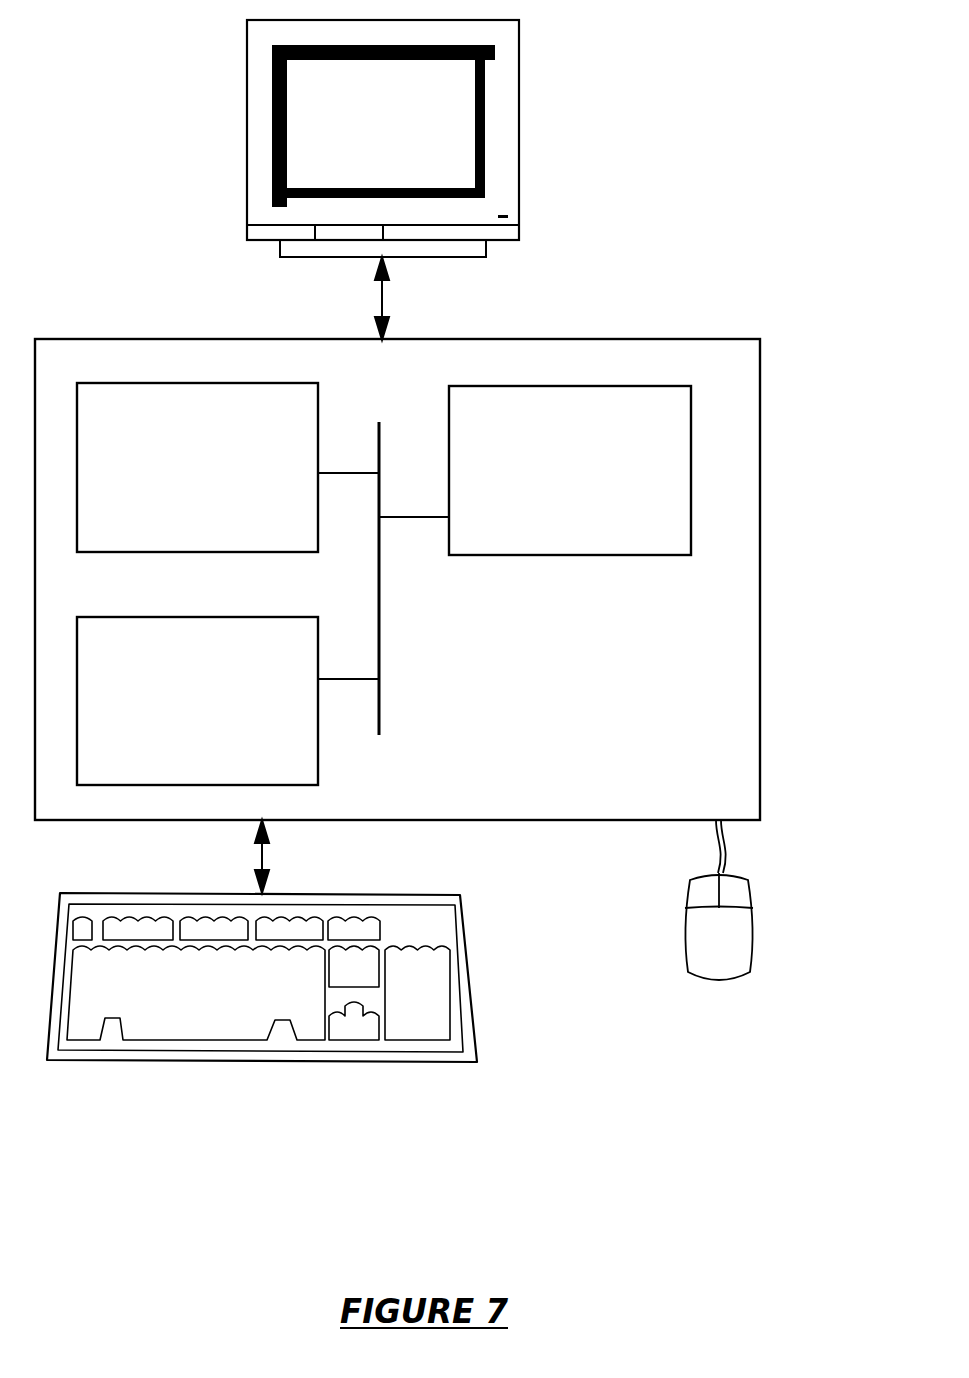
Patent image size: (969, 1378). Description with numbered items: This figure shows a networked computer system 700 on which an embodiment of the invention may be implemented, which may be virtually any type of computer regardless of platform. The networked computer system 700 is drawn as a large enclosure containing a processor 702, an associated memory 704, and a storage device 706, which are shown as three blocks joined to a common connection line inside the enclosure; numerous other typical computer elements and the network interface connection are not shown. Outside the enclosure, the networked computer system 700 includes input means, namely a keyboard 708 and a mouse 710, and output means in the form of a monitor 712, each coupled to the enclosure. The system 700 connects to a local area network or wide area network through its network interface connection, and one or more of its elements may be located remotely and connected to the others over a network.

The networked computer system 700 is at (781, 187).
The processor 702 is at (545, 484).
The memory 704 is at (175, 481).
The storage device 706 is at (170, 716).
The keyboard 708 is at (169, 1013).
The mouse 710 is at (697, 951).
The monitor 712 is at (359, 143).